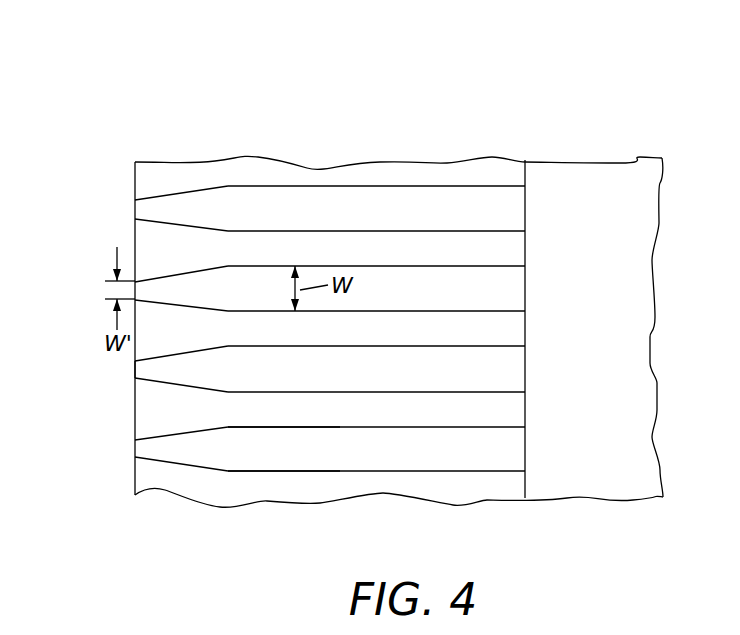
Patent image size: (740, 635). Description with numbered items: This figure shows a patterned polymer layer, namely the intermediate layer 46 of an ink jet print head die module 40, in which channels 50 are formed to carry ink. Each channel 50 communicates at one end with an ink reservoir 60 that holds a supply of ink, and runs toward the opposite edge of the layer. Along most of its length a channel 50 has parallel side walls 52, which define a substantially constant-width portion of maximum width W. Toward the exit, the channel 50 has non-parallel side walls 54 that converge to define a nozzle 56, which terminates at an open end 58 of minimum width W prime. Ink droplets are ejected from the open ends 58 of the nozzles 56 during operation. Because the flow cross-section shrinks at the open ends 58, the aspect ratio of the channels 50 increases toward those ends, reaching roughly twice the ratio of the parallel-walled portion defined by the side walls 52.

The ink jet print head die module 40 is at (537, 106).
The intermediate layer 46 is at (134, 178).
The channels 50 is at (418, 172).
The parallel side walls 52 is at (332, 426).
The non-parallel side walls 54 is at (165, 433).
The nozzles 56 is at (150, 292).
The open ends 58 is at (135, 370).
The ink reservoir 60 is at (618, 173).